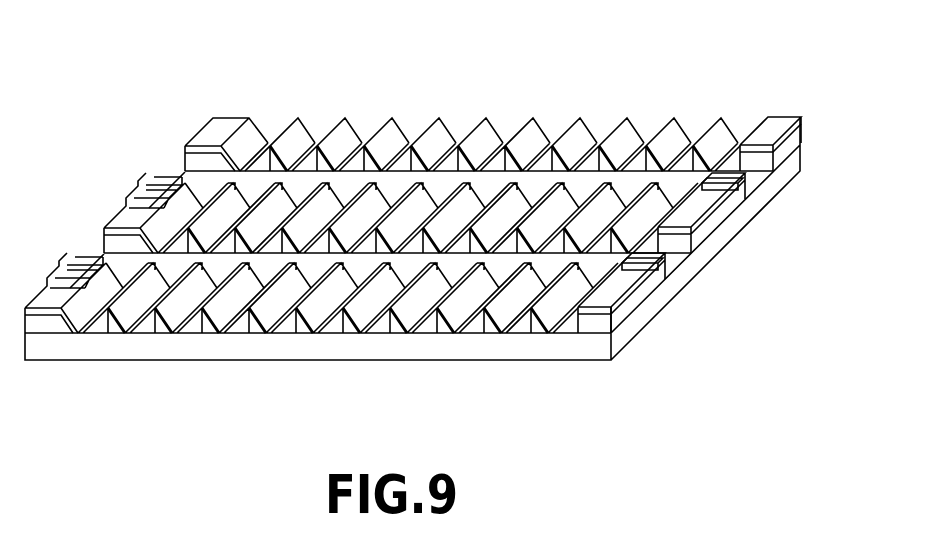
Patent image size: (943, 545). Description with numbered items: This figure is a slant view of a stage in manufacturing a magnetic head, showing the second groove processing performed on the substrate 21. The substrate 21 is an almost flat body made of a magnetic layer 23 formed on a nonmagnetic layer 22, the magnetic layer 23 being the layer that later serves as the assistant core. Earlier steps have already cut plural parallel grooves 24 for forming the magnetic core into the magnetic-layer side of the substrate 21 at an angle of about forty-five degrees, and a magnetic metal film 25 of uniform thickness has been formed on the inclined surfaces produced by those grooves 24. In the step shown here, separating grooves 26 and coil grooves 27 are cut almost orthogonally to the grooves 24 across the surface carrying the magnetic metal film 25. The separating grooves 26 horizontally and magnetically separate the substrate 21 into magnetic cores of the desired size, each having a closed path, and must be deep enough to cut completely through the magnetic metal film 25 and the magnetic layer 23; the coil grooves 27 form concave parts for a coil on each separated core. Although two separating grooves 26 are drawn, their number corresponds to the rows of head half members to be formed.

The substrate 21 is at (557, 104).
The nonmagnetic layer 22 is at (775, 181).
The magnetic layer 23 is at (797, 137).
The grooves for forming the magnetic core 24 is at (288, 140).
The magnetic metal film 25 is at (773, 128).
The separating grooves 26 is at (212, 200).
The coil grooves 27 is at (633, 276).